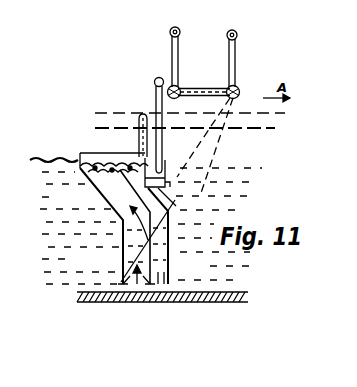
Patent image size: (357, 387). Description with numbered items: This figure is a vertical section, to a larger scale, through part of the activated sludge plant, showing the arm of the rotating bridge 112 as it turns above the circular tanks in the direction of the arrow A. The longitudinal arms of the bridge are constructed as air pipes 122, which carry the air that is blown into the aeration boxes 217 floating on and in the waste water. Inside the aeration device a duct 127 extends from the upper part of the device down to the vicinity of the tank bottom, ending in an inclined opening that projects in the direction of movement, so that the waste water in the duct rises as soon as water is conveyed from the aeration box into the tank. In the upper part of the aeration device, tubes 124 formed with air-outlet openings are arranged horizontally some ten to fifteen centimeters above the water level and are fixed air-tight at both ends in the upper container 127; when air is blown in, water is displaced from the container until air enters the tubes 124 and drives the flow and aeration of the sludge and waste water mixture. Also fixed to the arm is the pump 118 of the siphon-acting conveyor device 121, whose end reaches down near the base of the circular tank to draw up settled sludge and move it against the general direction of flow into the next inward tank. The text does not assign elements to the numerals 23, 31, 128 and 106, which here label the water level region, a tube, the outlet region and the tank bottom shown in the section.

The air pipes 122 is at (170, 86).
The rotating bridge 112 is at (195, 87).
The pump 118 is at (156, 108).
The water level 23 is at (164, 128).
The suction pipe 31 is at (112, 160).
The tubes 124 is at (101, 200).
The duct 127 is at (169, 197).
The aeration box 217 is at (121, 253).
The discharge outlet 128 is at (127, 276).
The conveyor device 121 is at (168, 279).
The bottom 106 is at (115, 305).